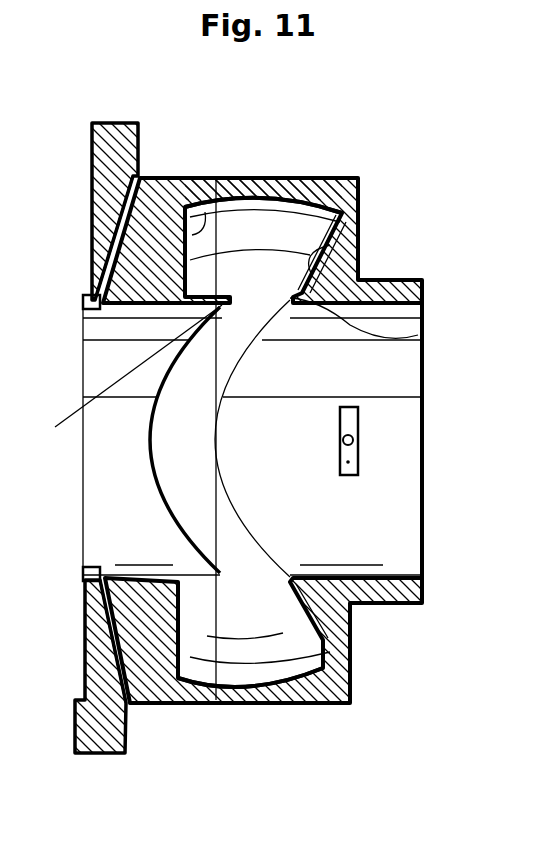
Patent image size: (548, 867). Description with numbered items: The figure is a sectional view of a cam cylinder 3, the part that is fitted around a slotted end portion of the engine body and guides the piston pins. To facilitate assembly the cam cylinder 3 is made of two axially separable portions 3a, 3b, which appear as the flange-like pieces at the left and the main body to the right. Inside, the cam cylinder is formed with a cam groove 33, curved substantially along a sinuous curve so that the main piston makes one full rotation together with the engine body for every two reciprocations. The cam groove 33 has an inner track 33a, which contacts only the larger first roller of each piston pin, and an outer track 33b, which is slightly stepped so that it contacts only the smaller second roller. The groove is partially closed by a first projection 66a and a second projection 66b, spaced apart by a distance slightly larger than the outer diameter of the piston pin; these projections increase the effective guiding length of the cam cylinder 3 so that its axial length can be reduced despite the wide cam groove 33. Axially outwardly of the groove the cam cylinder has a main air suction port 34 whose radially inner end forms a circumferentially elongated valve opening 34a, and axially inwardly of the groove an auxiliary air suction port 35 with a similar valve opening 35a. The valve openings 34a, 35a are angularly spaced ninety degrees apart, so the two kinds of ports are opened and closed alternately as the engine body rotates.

The cam cylinder 3 is at (340, 177).
The axially separable portion 3a is at (96, 203).
The axially separable portion 3b is at (308, 182).
The cam groove 33 is at (272, 210).
The inner track 33a is at (216, 180).
The outer track 33b is at (330, 245).
The main air suction port 34 is at (353, 440).
The valve opening 34a is at (352, 462).
The auxiliary air suction port 35 is at (140, 176).
The valve opening 35a is at (98, 310).
The first projection 66a is at (125, 439).
The second projection 66b is at (418, 335).